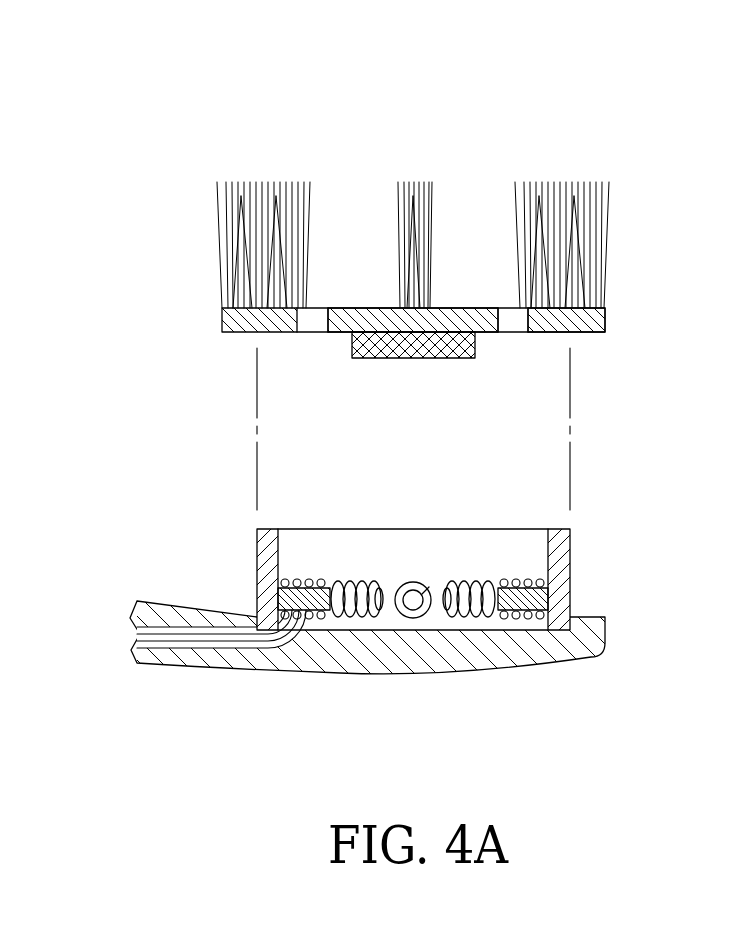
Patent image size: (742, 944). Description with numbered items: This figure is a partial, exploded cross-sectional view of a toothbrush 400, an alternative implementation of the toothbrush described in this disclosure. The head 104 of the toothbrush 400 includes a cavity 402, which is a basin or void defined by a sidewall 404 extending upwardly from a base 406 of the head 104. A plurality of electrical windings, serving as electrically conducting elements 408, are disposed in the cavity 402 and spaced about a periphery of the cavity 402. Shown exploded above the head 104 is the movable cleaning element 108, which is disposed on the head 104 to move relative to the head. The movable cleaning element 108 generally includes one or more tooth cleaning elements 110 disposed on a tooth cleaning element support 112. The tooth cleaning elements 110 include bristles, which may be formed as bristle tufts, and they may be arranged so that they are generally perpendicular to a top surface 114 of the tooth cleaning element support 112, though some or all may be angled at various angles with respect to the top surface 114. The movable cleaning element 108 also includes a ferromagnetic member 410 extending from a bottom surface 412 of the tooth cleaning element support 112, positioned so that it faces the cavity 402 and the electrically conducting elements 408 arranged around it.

The head 104 is at (177, 686).
The movable cleaning element 108 is at (188, 155).
The tooth cleaning elements 110 is at (220, 231).
The tooth cleaning element support 112 is at (222, 317).
The top surface 114 is at (468, 308).
The toothbrush 400 is at (610, 150).
The cavity 402 is at (497, 548).
The sidewall 404 is at (570, 567).
The base 406 is at (478, 652).
The electrically conducting elements 408 is at (322, 612).
The ferromagnetic member 410 is at (378, 358).
The bottom surface 412 is at (583, 332).